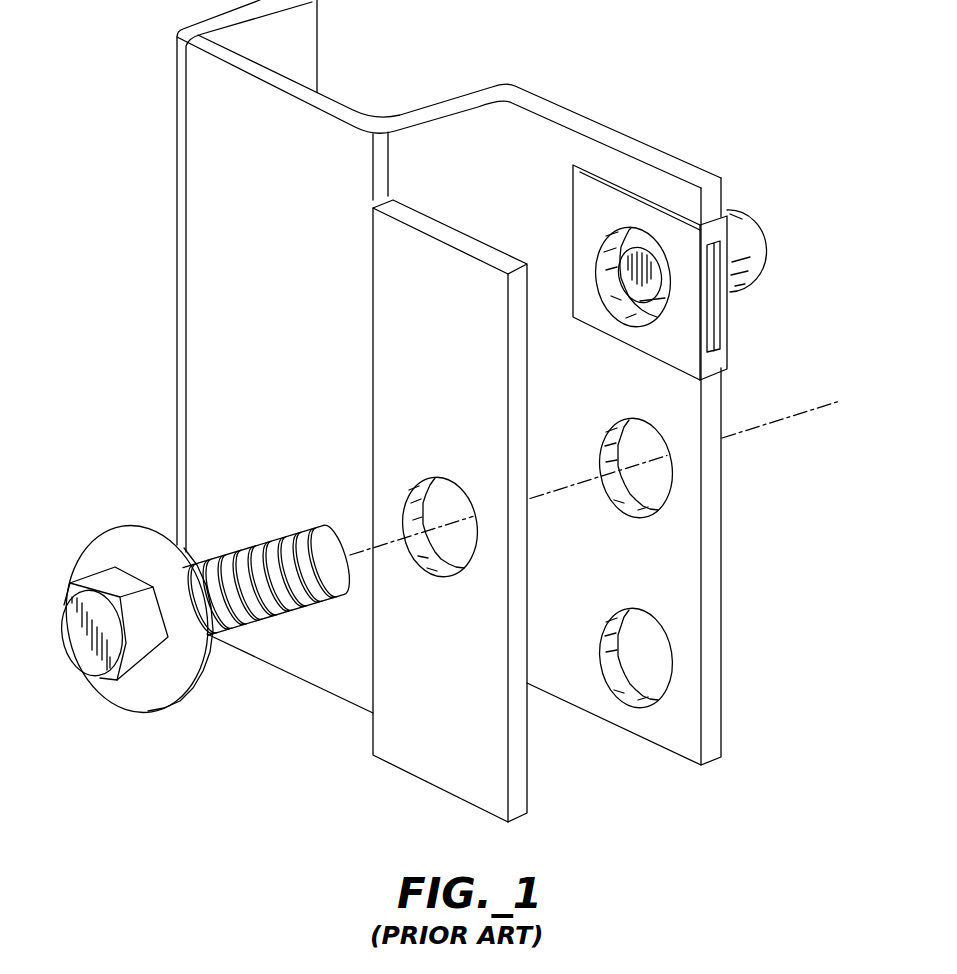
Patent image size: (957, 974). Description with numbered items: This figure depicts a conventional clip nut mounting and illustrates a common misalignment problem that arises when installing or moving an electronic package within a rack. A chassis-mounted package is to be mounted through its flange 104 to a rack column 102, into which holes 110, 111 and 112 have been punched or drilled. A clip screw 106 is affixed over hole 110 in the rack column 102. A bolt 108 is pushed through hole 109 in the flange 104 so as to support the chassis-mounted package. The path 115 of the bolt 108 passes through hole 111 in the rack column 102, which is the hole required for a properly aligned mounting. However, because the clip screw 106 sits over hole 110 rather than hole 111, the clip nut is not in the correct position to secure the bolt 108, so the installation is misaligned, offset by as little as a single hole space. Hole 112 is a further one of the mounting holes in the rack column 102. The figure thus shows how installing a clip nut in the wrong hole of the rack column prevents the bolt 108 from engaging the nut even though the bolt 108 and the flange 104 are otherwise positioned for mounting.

The rack column 102 is at (548, 91).
The flange 104 is at (418, 777).
The clip screw 106 is at (752, 263).
The bolt 108 is at (144, 660).
The hole 109 is at (441, 496).
The hole 110 is at (620, 226).
The hole 111 is at (655, 477).
The hole 112 is at (654, 656).
The path 115 is at (830, 451).